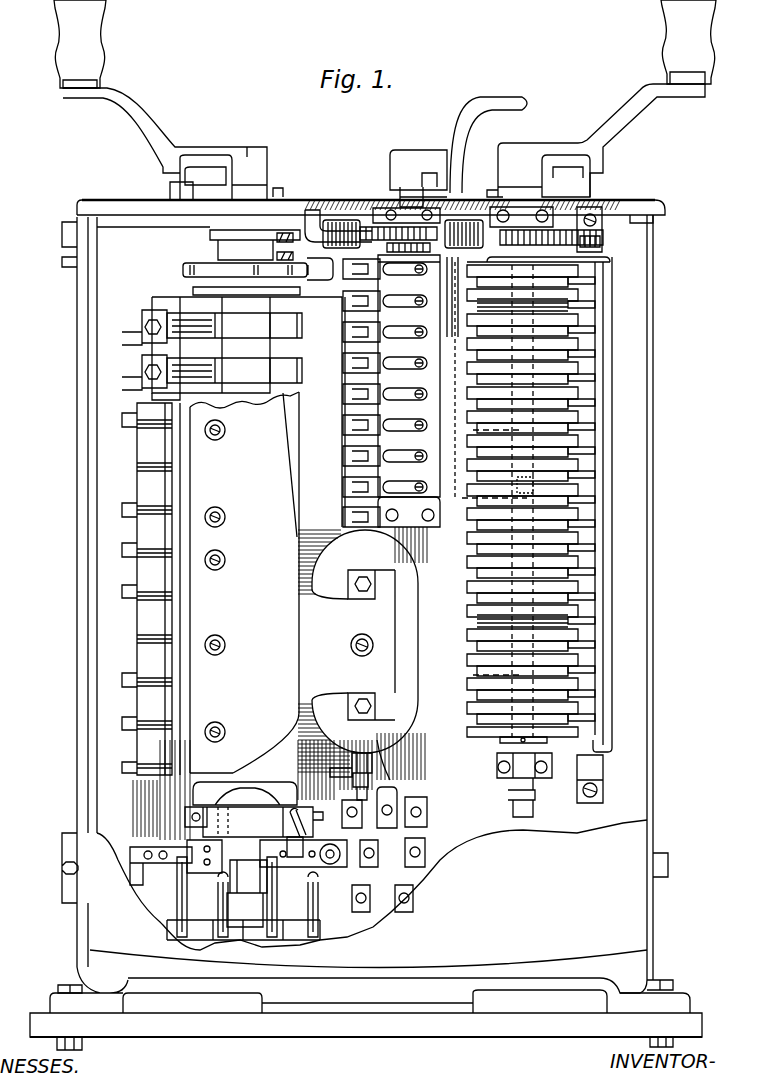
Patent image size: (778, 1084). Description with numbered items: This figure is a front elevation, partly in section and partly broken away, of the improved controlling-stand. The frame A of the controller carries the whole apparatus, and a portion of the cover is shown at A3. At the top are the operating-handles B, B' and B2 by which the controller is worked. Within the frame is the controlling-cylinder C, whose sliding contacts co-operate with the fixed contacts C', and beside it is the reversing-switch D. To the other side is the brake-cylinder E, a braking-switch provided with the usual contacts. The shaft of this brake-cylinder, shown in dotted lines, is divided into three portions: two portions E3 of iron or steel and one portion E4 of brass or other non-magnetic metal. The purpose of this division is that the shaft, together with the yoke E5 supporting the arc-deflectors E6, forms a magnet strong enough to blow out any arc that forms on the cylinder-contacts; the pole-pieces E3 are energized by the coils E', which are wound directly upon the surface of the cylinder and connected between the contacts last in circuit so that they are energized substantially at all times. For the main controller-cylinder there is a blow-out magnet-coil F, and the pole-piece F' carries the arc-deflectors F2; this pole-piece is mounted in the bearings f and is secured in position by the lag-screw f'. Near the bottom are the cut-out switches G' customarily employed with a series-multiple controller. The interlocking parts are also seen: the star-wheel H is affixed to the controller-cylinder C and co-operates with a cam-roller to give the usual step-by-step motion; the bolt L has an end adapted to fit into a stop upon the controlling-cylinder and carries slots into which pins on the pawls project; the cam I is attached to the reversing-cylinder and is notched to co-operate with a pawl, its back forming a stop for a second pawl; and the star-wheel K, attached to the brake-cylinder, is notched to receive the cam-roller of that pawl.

The frame A is at (80, 327).
The cover A3 is at (372, 885).
The operating-handle B is at (168, 100).
The operating-handle B2 is at (601, 98).
The operating-handle B' is at (458, 152).
The bolt L is at (322, 208).
The cam I is at (368, 230).
The star-wheel K is at (563, 230).
The star-wheel H is at (195, 262).
The controlling-cylinder C is at (227, 406).
The fixed contacts C' is at (234, 349).
The reversing-switch D is at (400, 391).
The brake-cylinder E is at (505, 502).
The coils E' is at (534, 454).
The shaft portions E3 is at (473, 430).
The shaft portion E4 is at (488, 494).
The yoke E5 is at (610, 648).
The arc-deflectors E6 is at (595, 524).
The blow-out magnet-coil F is at (362, 653).
The pole-piece F' is at (239, 583).
The arc-deflectors F2 is at (148, 643).
The bearings f is at (371, 645).
The lag-screw f' is at (345, 650).
The cut-out switches G' is at (225, 893).